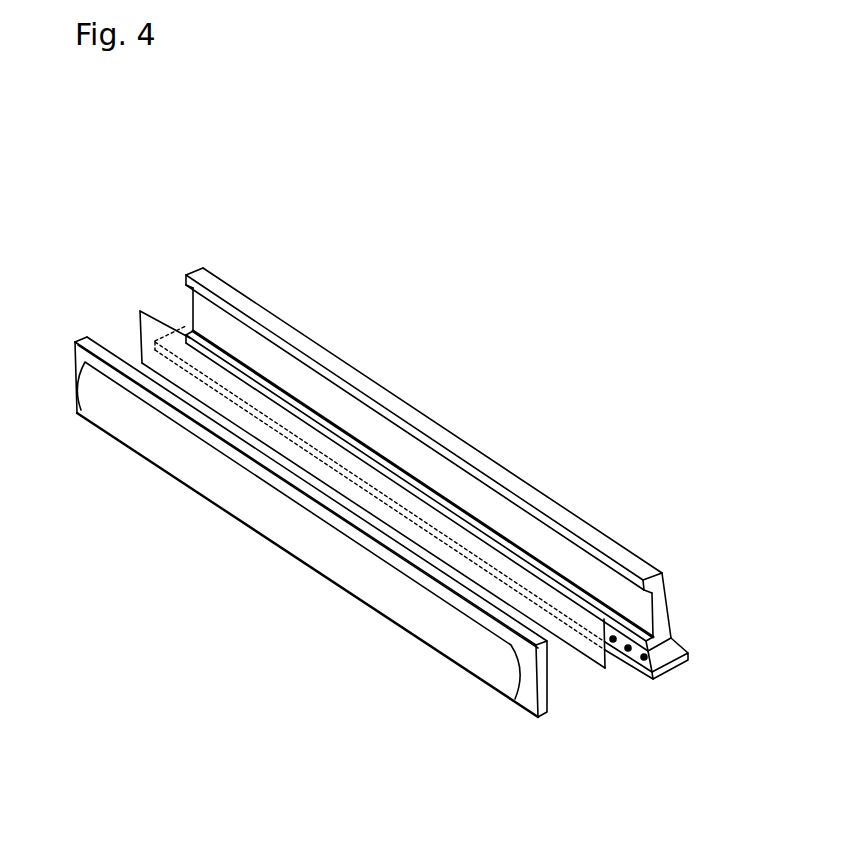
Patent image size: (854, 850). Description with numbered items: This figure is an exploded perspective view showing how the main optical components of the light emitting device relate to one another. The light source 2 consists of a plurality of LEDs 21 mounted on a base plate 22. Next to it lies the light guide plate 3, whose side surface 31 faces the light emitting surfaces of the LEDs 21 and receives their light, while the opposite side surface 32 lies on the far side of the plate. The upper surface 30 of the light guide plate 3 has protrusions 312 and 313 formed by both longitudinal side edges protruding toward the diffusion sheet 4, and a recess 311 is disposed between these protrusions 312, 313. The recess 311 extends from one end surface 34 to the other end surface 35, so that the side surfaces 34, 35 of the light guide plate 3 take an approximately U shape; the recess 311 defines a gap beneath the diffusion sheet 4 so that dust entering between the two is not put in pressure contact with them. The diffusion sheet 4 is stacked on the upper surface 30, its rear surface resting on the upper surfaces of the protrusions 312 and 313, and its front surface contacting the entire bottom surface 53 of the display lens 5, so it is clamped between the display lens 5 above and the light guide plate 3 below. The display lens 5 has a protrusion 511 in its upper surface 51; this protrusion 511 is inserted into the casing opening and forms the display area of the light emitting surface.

The light source 2 is at (466, 564).
The LEDs 21 is at (613, 641).
The base plate 22 is at (680, 647).
The light guide plate 3 is at (461, 484).
The upper surface 30 is at (373, 423).
The side surface 31 is at (653, 670).
The recess 311 is at (560, 553).
The protrusion 312 is at (290, 325).
The protrusion 313 is at (647, 629).
The side surface 32 is at (443, 437).
The side surface (one end surface) 34 is at (665, 596).
The side surface (the other end surface) 35 is at (186, 292).
The diffusion sheet 4 is at (137, 318).
The display lens 5 is at (289, 531).
The upper surface 51 is at (78, 363).
The protrusion 511 is at (386, 597).
The bottom surface 53 is at (548, 682).